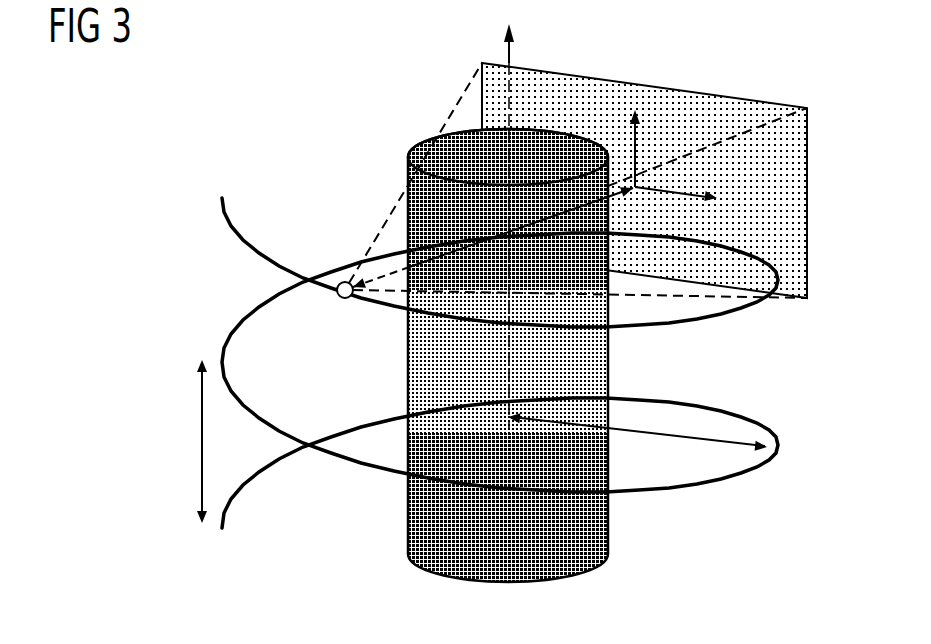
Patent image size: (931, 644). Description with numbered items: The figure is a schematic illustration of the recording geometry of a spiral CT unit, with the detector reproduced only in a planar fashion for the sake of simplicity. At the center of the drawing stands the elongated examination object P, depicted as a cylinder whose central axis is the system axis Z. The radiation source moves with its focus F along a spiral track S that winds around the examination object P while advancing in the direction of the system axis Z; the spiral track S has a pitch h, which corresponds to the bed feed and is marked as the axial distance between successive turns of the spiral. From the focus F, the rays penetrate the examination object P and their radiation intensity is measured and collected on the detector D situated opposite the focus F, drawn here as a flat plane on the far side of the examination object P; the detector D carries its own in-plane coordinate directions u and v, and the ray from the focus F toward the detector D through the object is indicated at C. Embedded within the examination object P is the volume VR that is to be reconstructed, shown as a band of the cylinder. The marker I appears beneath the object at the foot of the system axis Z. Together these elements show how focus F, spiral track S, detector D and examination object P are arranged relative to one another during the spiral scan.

The system axis Z is at (512, 55).
The detector D is at (757, 100).
The spiral track S is at (267, 250).
The focus F is at (338, 297).
The pitch h is at (191, 441).
The volume to be reconstructed VR is at (608, 382).
The examination object P is at (544, 356).
The detector coordinate axis u is at (689, 199).
The detector coordinate axis v is at (645, 139).
The central ray C is at (493, 237).
The axis marker I is at (504, 598).